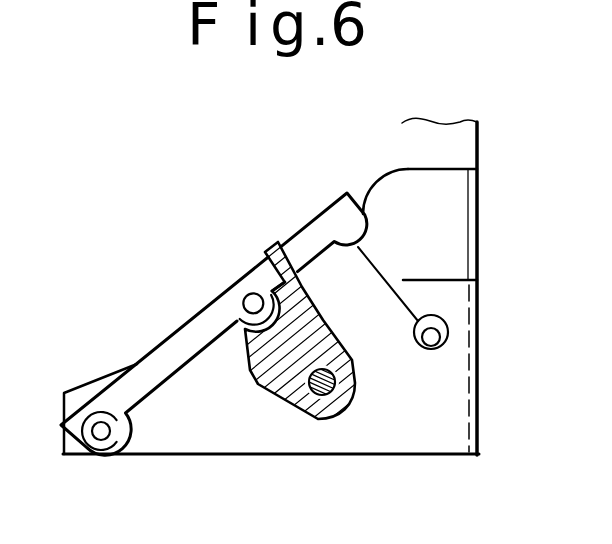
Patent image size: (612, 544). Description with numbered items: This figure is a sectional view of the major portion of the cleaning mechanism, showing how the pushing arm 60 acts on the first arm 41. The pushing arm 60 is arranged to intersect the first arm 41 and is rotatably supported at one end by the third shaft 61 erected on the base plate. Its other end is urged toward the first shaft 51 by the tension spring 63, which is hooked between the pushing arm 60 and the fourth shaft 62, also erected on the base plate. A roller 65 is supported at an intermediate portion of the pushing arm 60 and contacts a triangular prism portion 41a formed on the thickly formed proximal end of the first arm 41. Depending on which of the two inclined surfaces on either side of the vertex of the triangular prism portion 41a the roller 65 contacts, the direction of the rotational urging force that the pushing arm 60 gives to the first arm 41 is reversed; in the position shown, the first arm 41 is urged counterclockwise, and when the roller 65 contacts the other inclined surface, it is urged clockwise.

The pushing arm 60 is at (235, 283).
The third shaft 61 is at (101, 432).
The fourth shaft 62 is at (438, 337).
The tension spring 63 is at (398, 280).
The first arm 41 is at (345, 351).
The triangular prism portion 41a is at (243, 333).
The first shaft 51 is at (322, 385).
The roller 65 is at (237, 321).